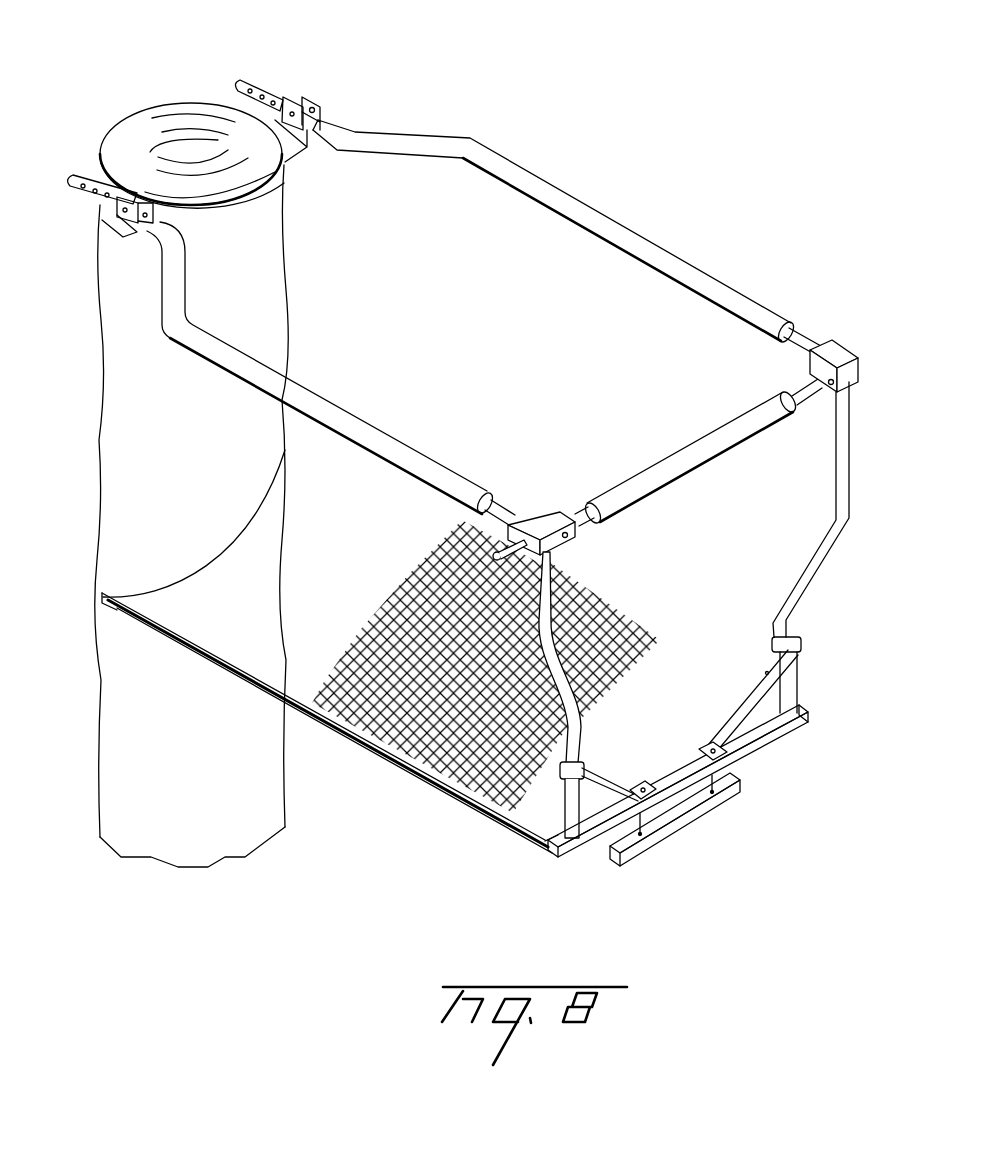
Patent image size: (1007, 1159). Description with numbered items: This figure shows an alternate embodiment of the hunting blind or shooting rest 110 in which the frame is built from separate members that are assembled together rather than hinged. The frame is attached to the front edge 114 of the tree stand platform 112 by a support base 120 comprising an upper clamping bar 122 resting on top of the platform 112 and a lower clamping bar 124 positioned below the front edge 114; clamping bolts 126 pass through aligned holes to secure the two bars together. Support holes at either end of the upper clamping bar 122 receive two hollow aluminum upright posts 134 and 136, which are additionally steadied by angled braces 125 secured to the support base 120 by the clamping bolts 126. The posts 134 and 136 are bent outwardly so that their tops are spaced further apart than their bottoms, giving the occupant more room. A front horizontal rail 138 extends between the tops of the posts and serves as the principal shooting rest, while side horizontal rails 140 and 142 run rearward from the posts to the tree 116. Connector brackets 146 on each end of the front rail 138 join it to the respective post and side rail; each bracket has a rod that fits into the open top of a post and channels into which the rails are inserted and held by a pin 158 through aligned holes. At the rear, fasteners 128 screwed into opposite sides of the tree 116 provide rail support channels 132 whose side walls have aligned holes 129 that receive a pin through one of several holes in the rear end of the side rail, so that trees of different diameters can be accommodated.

The tree stand 110 is at (176, 639).
The tree stand platform 112 is at (323, 577).
The front edge 114 is at (553, 853).
The tree 116 is at (221, 555).
The support base 120 is at (820, 777).
The upper clamping bar 122 is at (663, 780).
The lower clamping bar 124 is at (693, 820).
The angled braces 125 is at (798, 660).
The clamping bolts 126 is at (590, 845).
The fasteners 128 is at (275, 108).
The hole 129 is at (320, 107).
The rail support channel 132 is at (301, 98).
The upright post 134 is at (480, 803).
The upright post 136 is at (848, 493).
The front horizontal member or rail 138 is at (800, 385).
The side horizontal member or rail 140 is at (363, 430).
The side horizontal member or rail 142 is at (607, 223).
The connector bracket 146 is at (833, 360).
The locking pin 158 is at (500, 556).